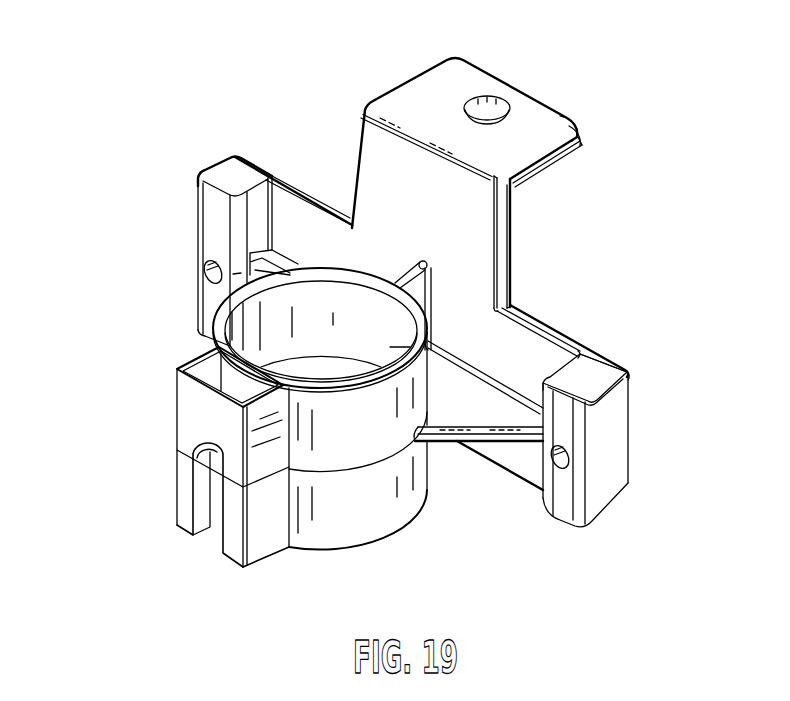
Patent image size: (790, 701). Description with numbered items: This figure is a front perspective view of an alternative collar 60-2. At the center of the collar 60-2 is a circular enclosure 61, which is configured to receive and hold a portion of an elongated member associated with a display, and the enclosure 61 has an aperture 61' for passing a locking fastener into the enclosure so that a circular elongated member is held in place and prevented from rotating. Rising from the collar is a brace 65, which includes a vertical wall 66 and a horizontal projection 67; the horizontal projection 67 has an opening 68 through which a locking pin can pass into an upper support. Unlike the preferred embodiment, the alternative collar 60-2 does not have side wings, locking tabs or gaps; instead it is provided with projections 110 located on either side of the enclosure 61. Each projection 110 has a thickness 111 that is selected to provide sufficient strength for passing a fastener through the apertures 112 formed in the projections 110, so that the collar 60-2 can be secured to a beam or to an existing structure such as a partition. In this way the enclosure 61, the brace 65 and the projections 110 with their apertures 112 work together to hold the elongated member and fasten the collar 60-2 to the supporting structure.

The alternative collar 60-2 is at (128, 313).
The vertical wall 66 is at (430, 215).
The opening 68 is at (496, 107).
The horizontal projection 67 is at (562, 122).
The brace 65 is at (508, 233).
The enclosure 61 is at (320, 409).
The aperture 61' is at (183, 457).
The projections 110 is at (240, 170).
The block side face 111 is at (220, 239).
The apertures 112 is at (207, 272).